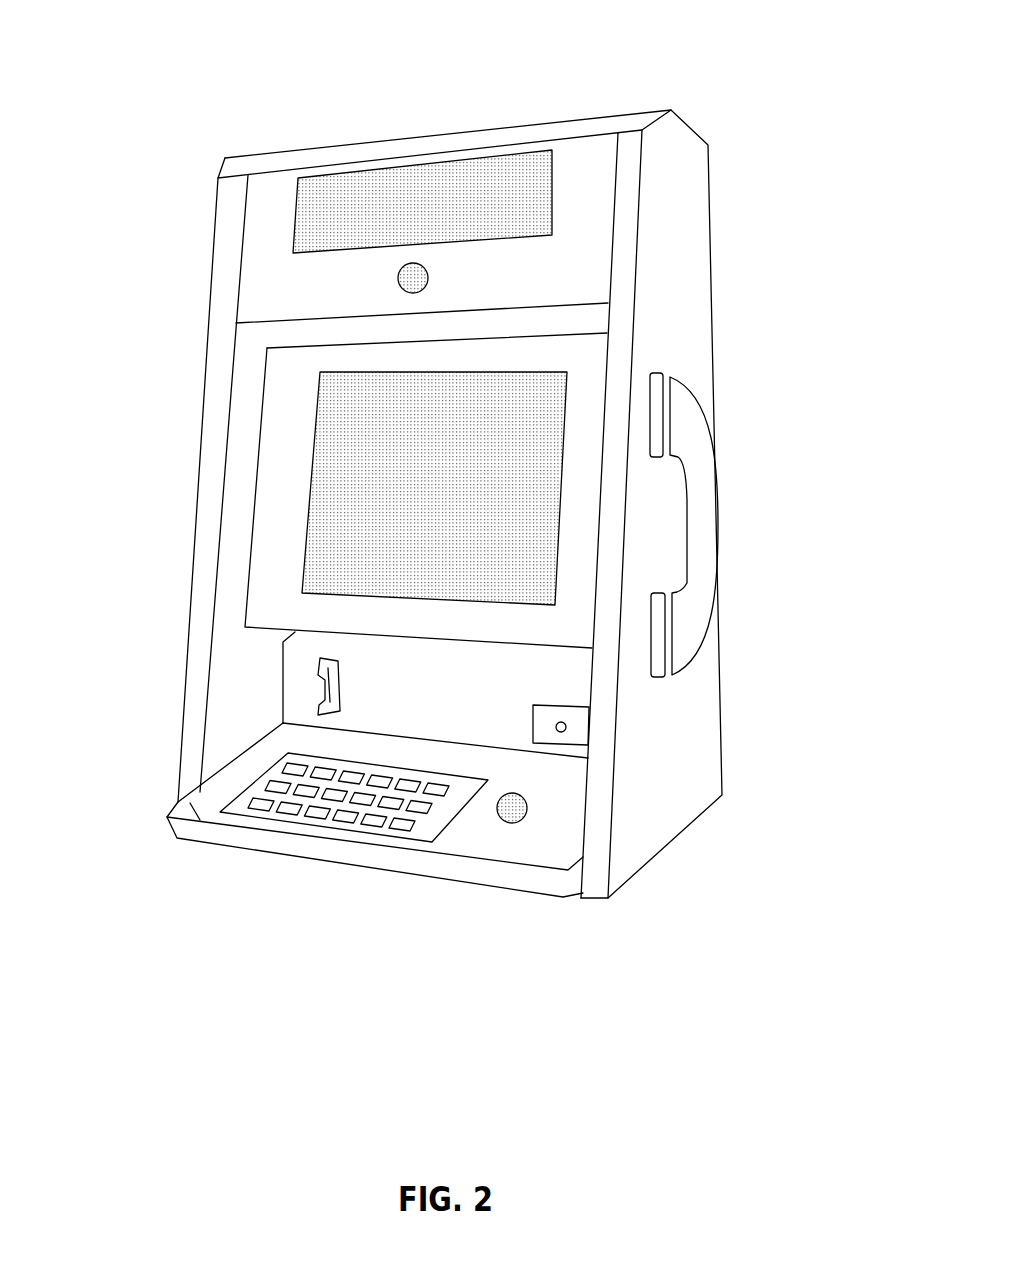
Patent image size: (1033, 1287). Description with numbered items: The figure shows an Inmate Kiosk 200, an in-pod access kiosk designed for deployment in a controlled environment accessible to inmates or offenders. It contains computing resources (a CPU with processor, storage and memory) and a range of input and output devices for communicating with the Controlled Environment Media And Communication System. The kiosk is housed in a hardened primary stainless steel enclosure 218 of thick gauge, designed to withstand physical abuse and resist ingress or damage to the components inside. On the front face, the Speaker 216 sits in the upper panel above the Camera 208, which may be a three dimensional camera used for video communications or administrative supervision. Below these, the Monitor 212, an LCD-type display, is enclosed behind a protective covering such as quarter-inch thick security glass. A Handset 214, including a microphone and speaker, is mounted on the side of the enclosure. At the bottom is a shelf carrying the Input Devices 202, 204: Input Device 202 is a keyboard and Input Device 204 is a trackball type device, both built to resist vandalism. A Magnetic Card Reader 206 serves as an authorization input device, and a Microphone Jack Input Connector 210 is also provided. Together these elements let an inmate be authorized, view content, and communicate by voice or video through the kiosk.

The Inmate Kiosk 200 is at (698, 49).
The Input Device 202 is at (340, 795).
The Input Device 204 is at (512, 808).
The Magnetic Card Reader 206 is at (317, 688).
The Camera 208 is at (410, 278).
The Microphone Jack Input Connector 210 is at (566, 728).
The Monitor 212 is at (433, 488).
The Handset 214 is at (718, 521).
The Speaker 216 is at (422, 200).
The primary stainless steel enclosure 218 is at (660, 268).